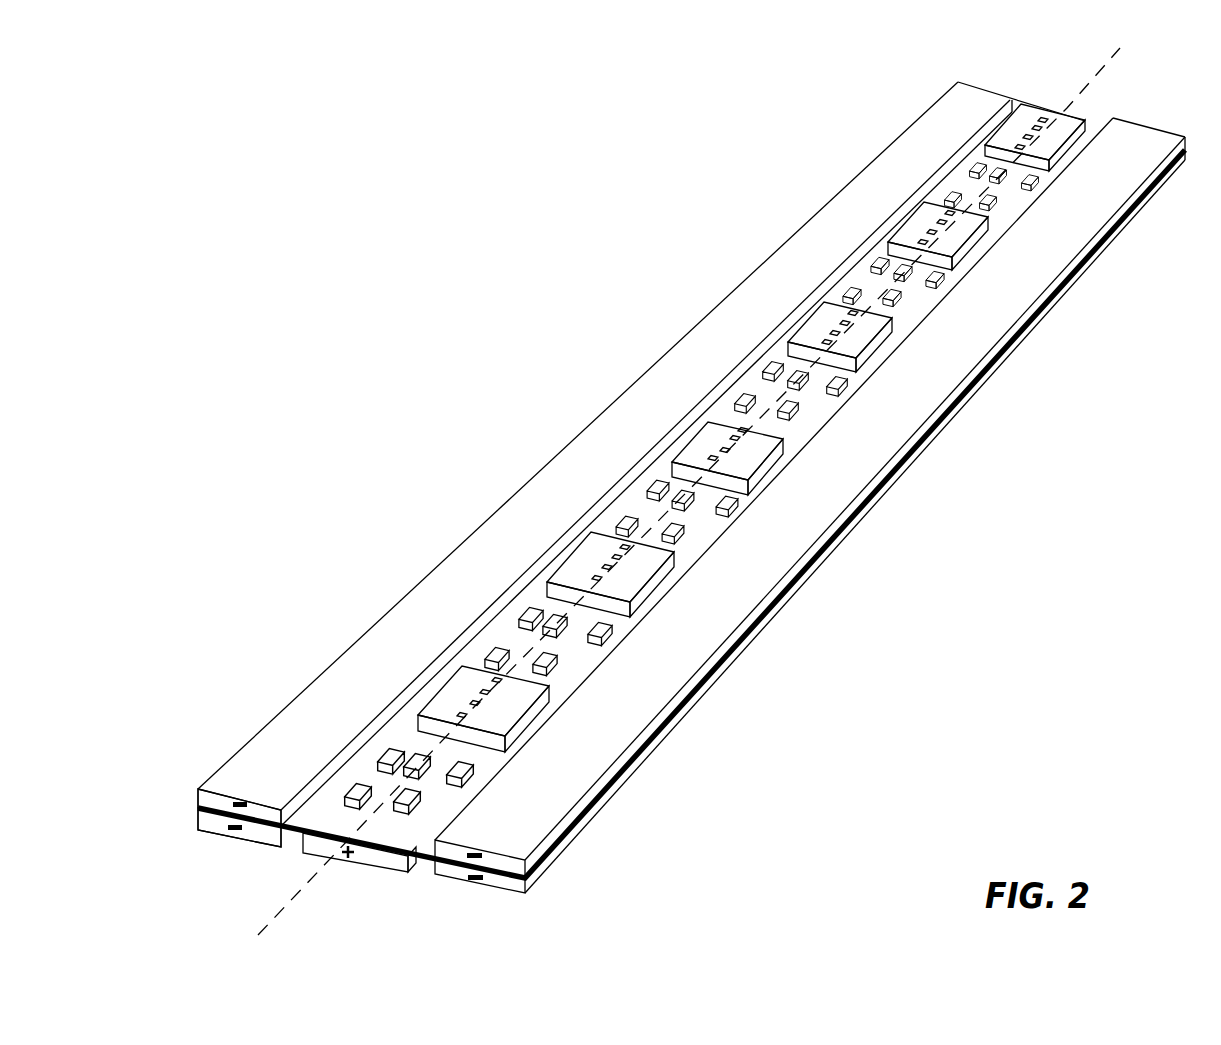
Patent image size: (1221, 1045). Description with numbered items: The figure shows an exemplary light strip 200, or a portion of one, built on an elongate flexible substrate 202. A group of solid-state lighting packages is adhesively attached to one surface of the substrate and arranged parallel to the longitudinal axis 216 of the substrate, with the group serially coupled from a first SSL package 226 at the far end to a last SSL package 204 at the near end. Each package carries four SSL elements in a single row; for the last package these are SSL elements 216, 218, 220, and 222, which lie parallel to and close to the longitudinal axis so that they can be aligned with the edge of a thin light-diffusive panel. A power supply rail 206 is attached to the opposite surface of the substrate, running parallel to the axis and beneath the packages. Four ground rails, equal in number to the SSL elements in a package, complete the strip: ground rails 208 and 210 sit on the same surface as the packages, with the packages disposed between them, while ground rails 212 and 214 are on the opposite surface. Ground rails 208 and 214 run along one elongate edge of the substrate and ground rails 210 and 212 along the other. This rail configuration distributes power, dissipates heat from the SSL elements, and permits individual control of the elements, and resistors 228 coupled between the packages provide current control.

The light strip 200 is at (505, 221).
The flexible substrate 202 is at (333, 812).
The SSL package 204 is at (450, 702).
The supply rail 206 is at (372, 868).
The ground rail 208 is at (258, 762).
The ground rail 210 is at (508, 847).
The ground rail 212 is at (508, 892).
The ground rail 214 is at (222, 835).
The longitudinal axis 216 is at (462, 715).
The SSL element 218 is at (475, 703).
The SSL element 220 is at (485, 692).
The SSL element 222 is at (497, 680).
The first SSL package 226 is at (1013, 127).
The resistors 228 is at (725, 497).